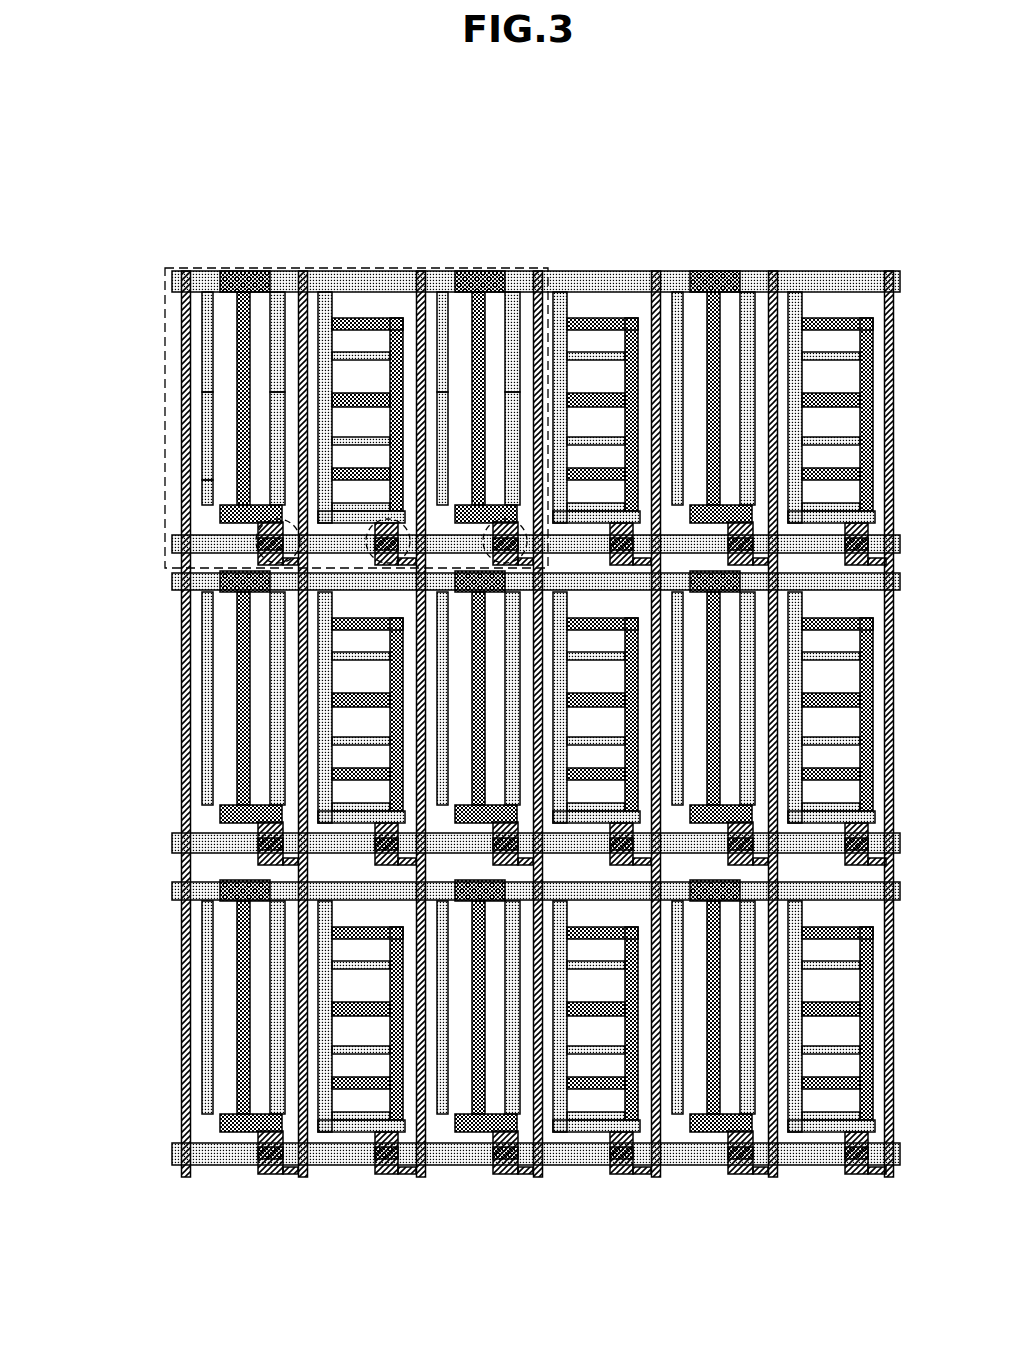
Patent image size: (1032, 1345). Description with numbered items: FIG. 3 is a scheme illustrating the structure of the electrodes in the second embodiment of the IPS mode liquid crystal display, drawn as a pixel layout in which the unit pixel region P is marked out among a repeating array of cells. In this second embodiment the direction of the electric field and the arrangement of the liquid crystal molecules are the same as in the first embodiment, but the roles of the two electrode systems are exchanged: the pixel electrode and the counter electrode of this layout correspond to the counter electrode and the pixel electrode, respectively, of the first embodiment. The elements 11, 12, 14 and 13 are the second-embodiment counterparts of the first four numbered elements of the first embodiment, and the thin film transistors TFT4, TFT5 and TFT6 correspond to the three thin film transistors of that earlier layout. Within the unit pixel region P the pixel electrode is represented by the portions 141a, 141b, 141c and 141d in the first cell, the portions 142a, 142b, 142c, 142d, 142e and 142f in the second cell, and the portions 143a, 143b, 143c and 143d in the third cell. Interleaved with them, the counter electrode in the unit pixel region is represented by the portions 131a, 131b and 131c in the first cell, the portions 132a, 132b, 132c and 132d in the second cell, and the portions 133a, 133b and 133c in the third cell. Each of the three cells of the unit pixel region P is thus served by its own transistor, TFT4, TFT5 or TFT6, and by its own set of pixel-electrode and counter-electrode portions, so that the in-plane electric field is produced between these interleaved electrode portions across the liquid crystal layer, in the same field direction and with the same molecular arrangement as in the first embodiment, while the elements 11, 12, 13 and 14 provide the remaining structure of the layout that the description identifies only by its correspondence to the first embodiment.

The structural element corresponding to the first embodiment 11 is at (900, 540).
The structural element corresponding to the first embodiment 12 is at (884, 273).
The structural element corresponding to the first embodiment 13 is at (368, 405).
The structural element corresponding to the first embodiment 14 is at (815, 273).
The pixel region P is at (187, 263).
The counter electrode 131a is at (243, 283).
The counter electrode 131b is at (238, 512).
The counter electrode 131c is at (243, 487).
The counter electrode 132a is at (342, 320).
The counter electrode 132b is at (362, 395).
The counter electrode 132c is at (377, 470).
The counter electrode 132d is at (392, 380).
The counter electrode 133a is at (478, 275).
The counter electrode 133b is at (478, 310).
The counter electrode 133c is at (490, 505).
The pixel electrode 141a is at (205, 422).
The pixel electrode 141b is at (275, 460).
The pixel electrode 141c is at (203, 285).
The pixel electrode 141d is at (207, 520).
The pixel electrode 142a is at (325, 295).
The pixel electrode 142b is at (357, 354).
The pixel electrode 142c is at (370, 438).
The pixel electrode 142d is at (382, 504).
The pixel electrode 142e is at (276, 295).
The pixel electrode 142f is at (385, 515).
The pixel electrode 143a is at (442, 295).
The pixel electrode 143b is at (512, 440).
The pixel electrode 143c is at (512, 300).
The pixel electrode 143d is at (443, 400).
The thin film transistor TFT4 is at (262, 545).
The thin film transistor TFT5 is at (380, 548).
The thin film transistor TFT6 is at (497, 548).